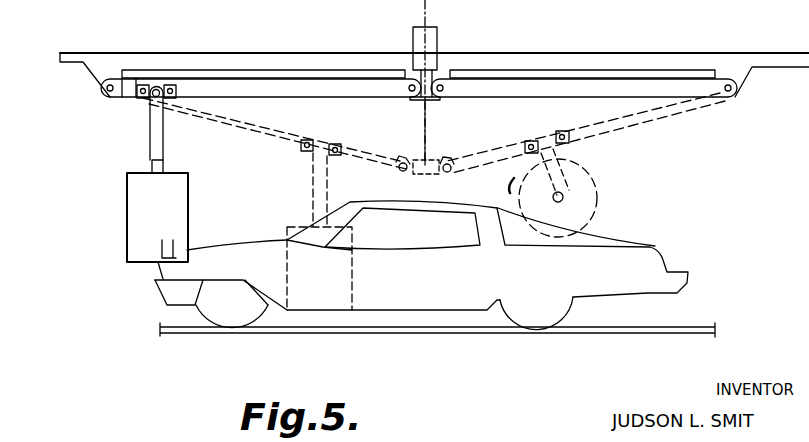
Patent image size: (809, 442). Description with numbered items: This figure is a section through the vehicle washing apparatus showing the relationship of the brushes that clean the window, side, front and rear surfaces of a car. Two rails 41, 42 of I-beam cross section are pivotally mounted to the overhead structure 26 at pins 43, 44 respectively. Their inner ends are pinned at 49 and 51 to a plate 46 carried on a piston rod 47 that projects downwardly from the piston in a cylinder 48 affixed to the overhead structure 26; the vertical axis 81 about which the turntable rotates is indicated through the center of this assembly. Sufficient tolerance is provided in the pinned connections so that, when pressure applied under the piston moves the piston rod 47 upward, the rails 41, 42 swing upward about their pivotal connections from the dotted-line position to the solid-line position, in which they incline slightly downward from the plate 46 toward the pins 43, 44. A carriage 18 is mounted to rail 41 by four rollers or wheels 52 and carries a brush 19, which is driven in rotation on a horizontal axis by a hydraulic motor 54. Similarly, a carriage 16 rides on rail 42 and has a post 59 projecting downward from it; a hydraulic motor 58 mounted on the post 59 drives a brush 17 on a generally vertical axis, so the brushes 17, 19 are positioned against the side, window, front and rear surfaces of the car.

The carriage 16 is at (143, 100).
The brush 17 is at (131, 208).
The carriage 18 is at (558, 148).
The brush 19 is at (583, 190).
The overhead structure 26 is at (483, 63).
The rail 41 is at (553, 83).
The rail 42 is at (264, 70).
The pin 43 is at (740, 92).
The pin 44 is at (108, 96).
The plate 46 is at (433, 158).
The piston rod 47 is at (422, 128).
The cylinder 48 is at (413, 41).
The pin 49 is at (450, 171).
The pin 51 is at (399, 171).
The rollers or wheels 52 is at (557, 134).
The hydraulic motor 54 is at (566, 200).
The hydraulic motor 58 is at (165, 164).
The post 59 is at (151, 141).
The vertical axis 81 is at (425, 14).